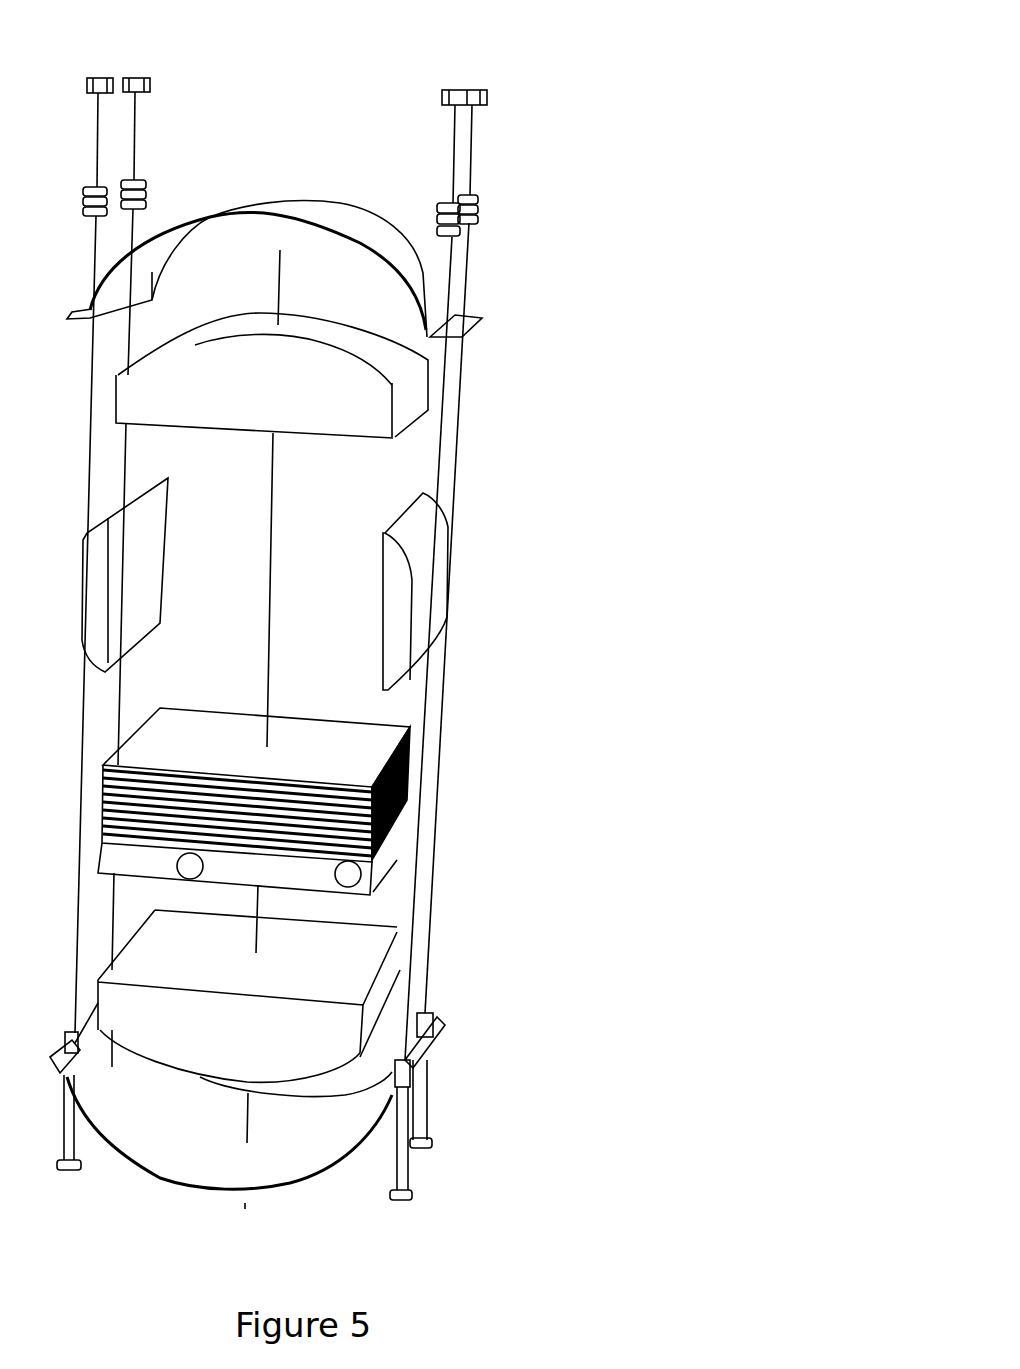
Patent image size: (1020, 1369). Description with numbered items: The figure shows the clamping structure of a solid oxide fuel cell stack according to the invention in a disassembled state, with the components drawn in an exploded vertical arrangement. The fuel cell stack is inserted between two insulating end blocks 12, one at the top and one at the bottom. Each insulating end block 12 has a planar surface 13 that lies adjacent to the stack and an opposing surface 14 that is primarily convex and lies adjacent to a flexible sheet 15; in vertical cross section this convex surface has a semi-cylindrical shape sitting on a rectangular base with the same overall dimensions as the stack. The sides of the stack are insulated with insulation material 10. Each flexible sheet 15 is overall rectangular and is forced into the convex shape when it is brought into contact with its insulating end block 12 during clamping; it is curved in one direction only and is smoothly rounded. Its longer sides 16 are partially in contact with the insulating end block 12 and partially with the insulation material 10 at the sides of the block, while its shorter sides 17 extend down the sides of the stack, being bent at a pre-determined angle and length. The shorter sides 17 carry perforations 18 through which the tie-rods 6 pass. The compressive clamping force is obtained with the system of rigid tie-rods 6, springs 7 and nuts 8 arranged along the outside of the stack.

The tie-rods 6 is at (400, 1165).
The springs 7 is at (477, 203).
The nuts 8 is at (467, 85).
The insulation material 10 is at (420, 550).
The insulating end block 12 is at (297, 382).
The planar surface 13 is at (393, 438).
The opposing surface 14 is at (300, 340).
The flexible sheet 15 is at (425, 257).
The longer sides 16 is at (325, 197).
The shorter sides 17 is at (430, 323).
The perforations 18 is at (462, 300).